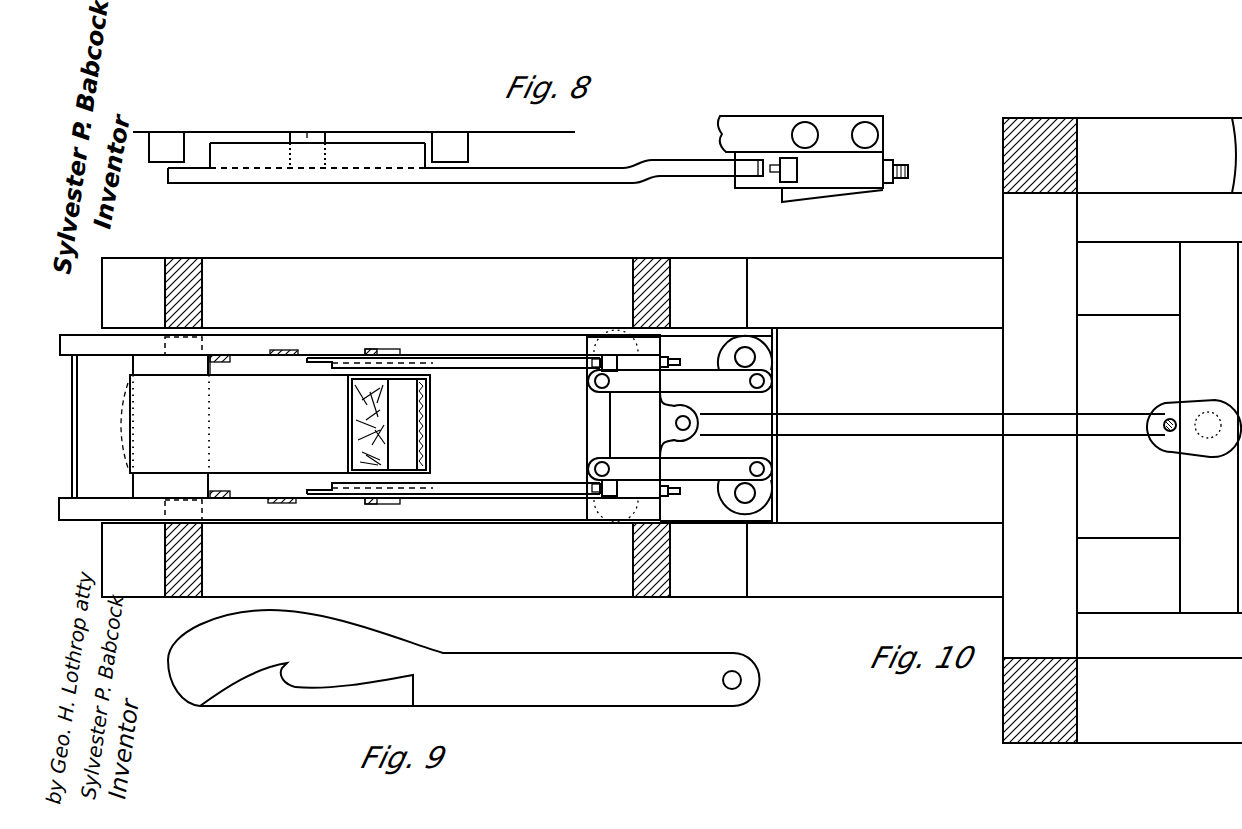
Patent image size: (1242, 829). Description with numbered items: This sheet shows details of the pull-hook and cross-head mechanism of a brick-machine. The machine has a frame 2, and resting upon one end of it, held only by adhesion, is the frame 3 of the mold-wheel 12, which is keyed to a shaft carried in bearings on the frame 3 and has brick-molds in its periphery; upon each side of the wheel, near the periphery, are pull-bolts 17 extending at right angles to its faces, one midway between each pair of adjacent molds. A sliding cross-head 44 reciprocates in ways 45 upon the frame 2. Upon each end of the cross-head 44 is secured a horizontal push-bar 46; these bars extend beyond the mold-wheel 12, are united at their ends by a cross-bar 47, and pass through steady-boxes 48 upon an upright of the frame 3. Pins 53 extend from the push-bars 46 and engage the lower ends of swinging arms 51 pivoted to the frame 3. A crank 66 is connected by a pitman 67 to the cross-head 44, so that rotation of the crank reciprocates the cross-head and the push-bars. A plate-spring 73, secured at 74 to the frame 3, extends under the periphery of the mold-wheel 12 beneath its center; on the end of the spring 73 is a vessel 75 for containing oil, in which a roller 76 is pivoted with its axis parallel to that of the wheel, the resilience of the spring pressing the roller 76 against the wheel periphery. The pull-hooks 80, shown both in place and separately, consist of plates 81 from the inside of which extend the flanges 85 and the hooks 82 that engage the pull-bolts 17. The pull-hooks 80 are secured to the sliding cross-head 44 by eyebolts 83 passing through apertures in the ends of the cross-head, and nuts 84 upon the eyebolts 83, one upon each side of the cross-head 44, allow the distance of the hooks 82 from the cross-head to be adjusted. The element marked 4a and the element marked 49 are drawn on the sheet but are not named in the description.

In FIG. 10, the frame of the machine 2 is at (1122, 430).
In FIG. 10, the frame of the mold-wheel 3 is at (552, 427).
In FIG. 10, the guide strip 4a is at (296, 512).
In FIG. 8, the mold-wheel 12 is at (323, 123).
In FIG. 8, the pull-bolts 17 is at (308, 139).
In FIG. 8, the sliding cross-head 44 is at (809, 177).
In FIG. 10, the sliding cross-head 44 is at (642, 428).
In FIG. 10, the ways 45 is at (680, 425).
In FIG. 8, the horizontal push-bar 46 is at (800, 134).
In FIG. 10, the horizontal push-bar 46 is at (453, 427).
In FIG. 10, the cross-bar 47 is at (87, 426).
In FIG. 10, the steady-boxes 48 is at (170, 428).
In FIG. 10, the guide 49 is at (402, 340).
In FIG. 10, the swinging arm 51 is at (239, 418).
In FIG. 10, the pins 53 is at (228, 494).
In FIG. 10, the crank 66 is at (1194, 428).
In FIG. 10, the pitman 67 is at (932, 425).
In FIG. 10, the plate-spring 73 is at (280, 424).
In FIG. 10, the securing point of plate-spring 74 is at (124, 426).
In FIG. 10, the vessel for containing oil 75 is at (436, 420).
In FIG. 10, the roller 76 is at (405, 424).
In FIG. 8, the pull-hooks 80 is at (640, 190).
In FIG. 9, the pull-hooks 80 is at (464, 668).
In FIG. 10, the pull-hooks 80 is at (516, 425).
In FIG. 8, the plates 81 is at (400, 166).
In FIG. 9, the plates 81 is at (588, 675).
In FIG. 8, the hooks 82 is at (317, 155).
In FIG. 9, the hooks 82 is at (247, 684).
In FIG. 8, the eyebolts 83 is at (908, 172).
In FIG. 10, the eyebolts 83 is at (687, 491).
In FIG. 8, the nuts 84 is at (887, 186).
In FIG. 10, the nuts 84 is at (668, 498).
In FIG. 8, the flanges 85 is at (317, 155).
In FIG. 9, the flanges 85 is at (354, 690).
In FIG. 10, the flanges 85 is at (433, 474).